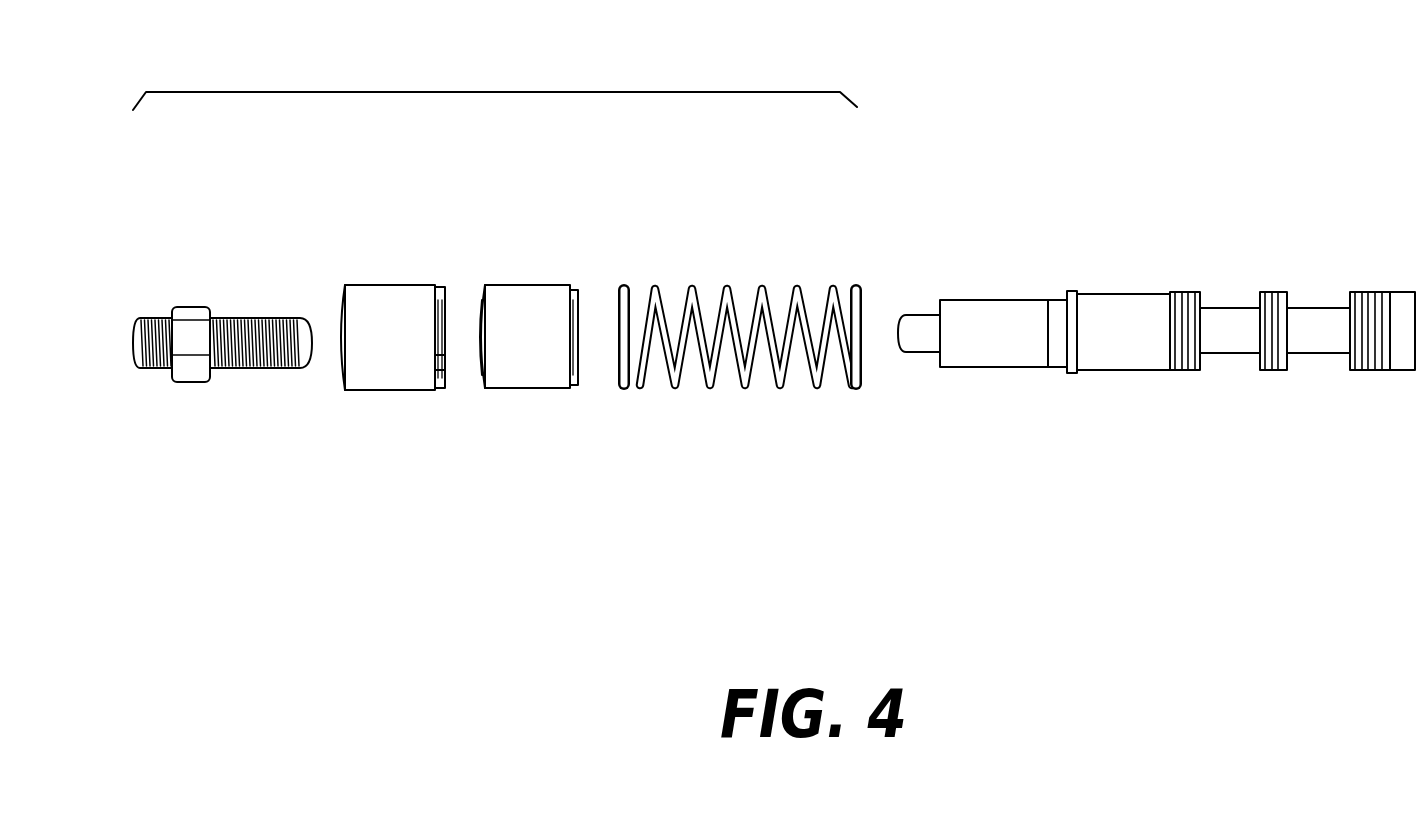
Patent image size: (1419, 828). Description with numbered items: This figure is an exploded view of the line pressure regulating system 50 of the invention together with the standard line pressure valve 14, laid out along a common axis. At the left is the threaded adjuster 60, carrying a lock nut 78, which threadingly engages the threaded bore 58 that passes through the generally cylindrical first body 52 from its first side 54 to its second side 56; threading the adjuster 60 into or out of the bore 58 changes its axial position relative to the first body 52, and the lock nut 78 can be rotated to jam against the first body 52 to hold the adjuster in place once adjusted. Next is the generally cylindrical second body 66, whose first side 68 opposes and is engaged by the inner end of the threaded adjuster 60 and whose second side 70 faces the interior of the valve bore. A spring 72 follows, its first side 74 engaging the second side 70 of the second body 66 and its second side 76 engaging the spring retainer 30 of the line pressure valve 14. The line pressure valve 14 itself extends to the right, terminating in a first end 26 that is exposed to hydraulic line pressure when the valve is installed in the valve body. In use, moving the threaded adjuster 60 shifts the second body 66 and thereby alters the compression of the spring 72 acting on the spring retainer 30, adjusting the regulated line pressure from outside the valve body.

The line pressure regulating system 50 is at (493, 92).
The threaded adjuster 60 is at (162, 318).
The lock nut 78 is at (192, 330).
The first body 52 is at (374, 318).
The first side of first body 54 is at (337, 313).
The second side of first body 56 is at (443, 292).
The threaded bore 58 is at (446, 386).
The second body 66 is at (547, 395).
The first side of second body 68 is at (478, 386).
The second side of second body 70 is at (575, 380).
The spring 72 is at (767, 276).
The first side of spring 74 is at (643, 283).
The second side of spring 76 is at (860, 287).
The spring retainer 30 is at (1073, 305).
The line pressure valve 14 is at (1145, 302).
The first end of line pressure valve 26 is at (1378, 295).